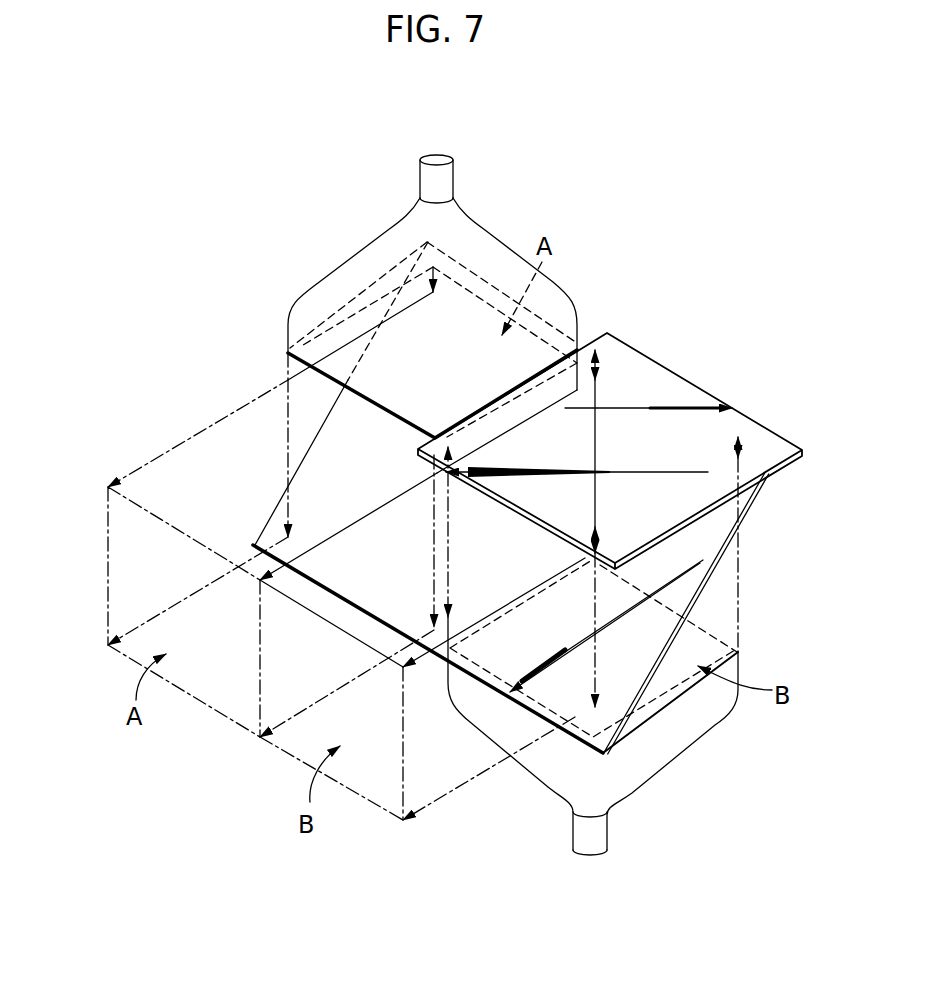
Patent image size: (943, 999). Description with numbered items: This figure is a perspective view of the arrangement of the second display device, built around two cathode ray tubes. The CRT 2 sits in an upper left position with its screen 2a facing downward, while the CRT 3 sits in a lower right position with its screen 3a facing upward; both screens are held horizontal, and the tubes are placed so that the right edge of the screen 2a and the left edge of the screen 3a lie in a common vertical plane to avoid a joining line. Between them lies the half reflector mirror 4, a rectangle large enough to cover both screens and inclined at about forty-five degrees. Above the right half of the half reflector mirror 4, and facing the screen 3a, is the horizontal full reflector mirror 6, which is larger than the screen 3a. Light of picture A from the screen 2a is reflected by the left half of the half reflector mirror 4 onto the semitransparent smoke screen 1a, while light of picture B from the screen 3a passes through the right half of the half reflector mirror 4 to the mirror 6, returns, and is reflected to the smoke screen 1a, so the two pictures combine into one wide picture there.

The smoke screen 1a is at (104, 541).
The CRT 2 is at (477, 228).
The screen 2a is at (536, 350).
The CRT 3 is at (495, 700).
The screen 3a is at (700, 641).
The half reflector mirror 4 is at (726, 553).
The mirror 6 is at (752, 418).